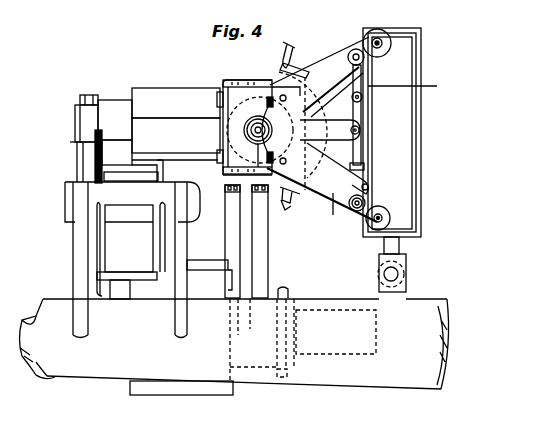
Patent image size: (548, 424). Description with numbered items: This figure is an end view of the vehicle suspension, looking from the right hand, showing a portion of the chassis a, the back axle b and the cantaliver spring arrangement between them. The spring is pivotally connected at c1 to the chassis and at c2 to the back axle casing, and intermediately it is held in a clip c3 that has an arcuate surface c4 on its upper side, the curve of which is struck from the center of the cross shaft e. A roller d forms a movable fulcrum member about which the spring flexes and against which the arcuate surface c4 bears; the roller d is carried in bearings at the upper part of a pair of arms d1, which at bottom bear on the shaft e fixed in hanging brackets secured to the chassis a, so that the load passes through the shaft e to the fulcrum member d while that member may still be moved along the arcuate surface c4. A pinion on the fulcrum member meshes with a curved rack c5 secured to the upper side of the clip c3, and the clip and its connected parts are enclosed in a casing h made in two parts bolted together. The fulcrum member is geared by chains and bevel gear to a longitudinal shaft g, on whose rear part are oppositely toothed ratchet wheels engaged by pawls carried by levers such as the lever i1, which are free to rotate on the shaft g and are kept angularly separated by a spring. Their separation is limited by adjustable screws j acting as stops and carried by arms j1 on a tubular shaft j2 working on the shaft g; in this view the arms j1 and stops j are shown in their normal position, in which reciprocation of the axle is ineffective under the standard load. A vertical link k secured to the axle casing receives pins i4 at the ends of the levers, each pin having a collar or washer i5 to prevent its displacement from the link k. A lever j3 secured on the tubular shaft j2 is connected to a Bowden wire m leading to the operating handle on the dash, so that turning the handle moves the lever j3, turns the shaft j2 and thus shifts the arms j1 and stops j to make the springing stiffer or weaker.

The chassis a is at (230, 80).
The back axle b is at (20, 337).
The pivotal connection of spring to chassis c1 is at (258, 257).
The pivotal connection of spring to back axle casing c2 is at (128, 252).
The clip c3 is at (107, 175).
The arcuate surface c4 is at (112, 157).
The curved rack c5 is at (97, 132).
The roller d is at (76, 123).
The arm d1 is at (80, 153).
The shaft e is at (18, 326).
The longitudinal shaft g is at (250, 124).
The casing h is at (152, 100).
The lever i1 is at (329, 72).
The pin i4 is at (380, 42).
The collar or washer i5 is at (364, 55).
The adjustable screw j is at (290, 45).
The arm j1 is at (300, 66).
The tubular shaft j2 is at (338, 211).
The lever j3 is at (321, 127).
The vertical link k is at (420, 160).
The Bowden wire m is at (356, 157).